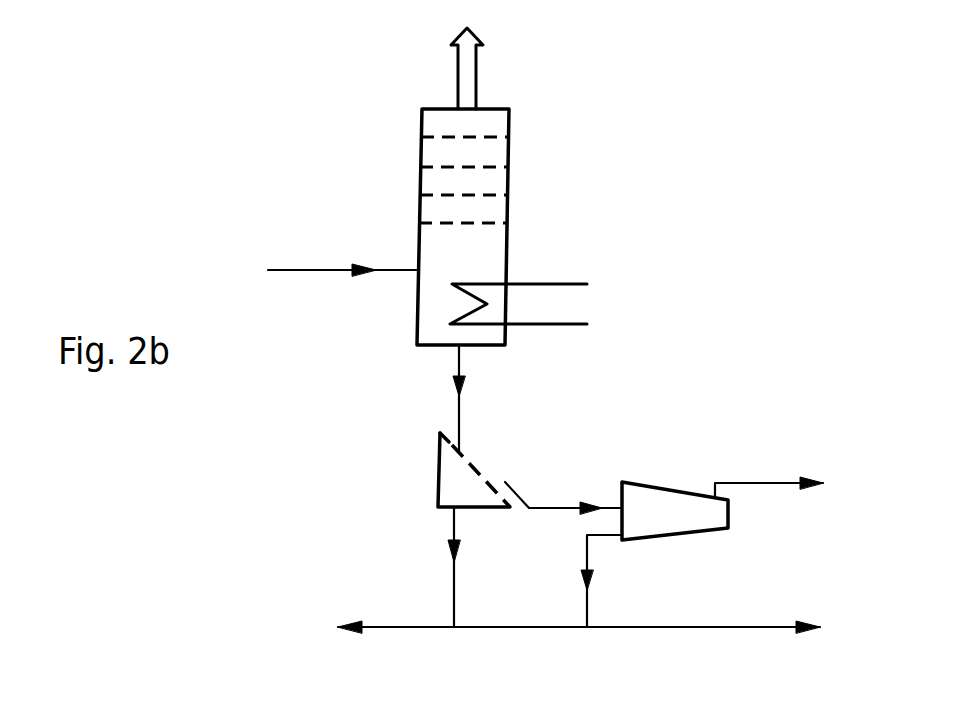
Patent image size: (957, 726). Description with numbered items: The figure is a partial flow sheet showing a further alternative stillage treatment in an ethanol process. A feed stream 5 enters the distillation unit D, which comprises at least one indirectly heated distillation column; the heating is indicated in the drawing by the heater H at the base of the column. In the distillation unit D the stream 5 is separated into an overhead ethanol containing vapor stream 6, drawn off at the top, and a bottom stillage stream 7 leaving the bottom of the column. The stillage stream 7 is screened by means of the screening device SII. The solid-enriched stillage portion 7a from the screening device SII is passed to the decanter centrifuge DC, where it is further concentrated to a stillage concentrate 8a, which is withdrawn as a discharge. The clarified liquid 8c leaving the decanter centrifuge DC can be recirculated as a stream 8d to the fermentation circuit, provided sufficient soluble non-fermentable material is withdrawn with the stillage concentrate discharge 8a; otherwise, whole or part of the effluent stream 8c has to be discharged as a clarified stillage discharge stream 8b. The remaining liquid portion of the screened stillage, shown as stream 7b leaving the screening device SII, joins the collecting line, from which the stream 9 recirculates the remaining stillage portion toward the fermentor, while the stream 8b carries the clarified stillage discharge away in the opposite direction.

The stream 5 is at (298, 270).
The overhead ethanol containing vapor stream 6 is at (477, 72).
The distillation unit D is at (508, 195).
The heater / reboiler H is at (553, 325).
The bottom stillage stream 7 is at (459, 417).
The screening device SII is at (437, 468).
The solid-enriched stillage portion 7a is at (562, 508).
The decanter centrifuge DC is at (647, 482).
The stillage concentrate 8a is at (773, 483).
The clarified stillage discharge stream 8b is at (748, 625).
The clarified liquid 8c is at (587, 598).
The stream 8d is at (515, 629).
The separator liquid line 7b is at (454, 590).
The stream 9 is at (385, 629).